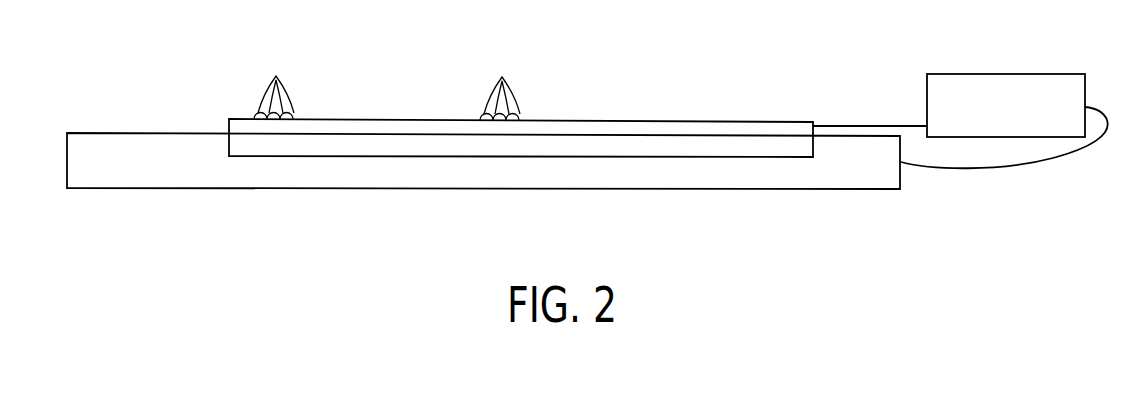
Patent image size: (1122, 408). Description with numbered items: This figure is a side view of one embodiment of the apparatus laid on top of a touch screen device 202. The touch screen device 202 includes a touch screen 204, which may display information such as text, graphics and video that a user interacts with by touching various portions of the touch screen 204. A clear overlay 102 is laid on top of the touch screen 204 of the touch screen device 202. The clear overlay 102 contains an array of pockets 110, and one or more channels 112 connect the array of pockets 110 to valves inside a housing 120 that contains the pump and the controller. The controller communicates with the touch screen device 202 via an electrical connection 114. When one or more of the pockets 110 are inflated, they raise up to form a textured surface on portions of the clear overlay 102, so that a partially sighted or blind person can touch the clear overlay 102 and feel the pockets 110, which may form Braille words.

The clear overlay 102 is at (743, 120).
The pockets 110 is at (387, 85).
The channels 112 is at (869, 123).
The electrical connection 114 is at (1025, 167).
The housing 120 is at (1007, 73).
The touch screen device 202 is at (95, 188).
The touch screen 204 is at (270, 148).